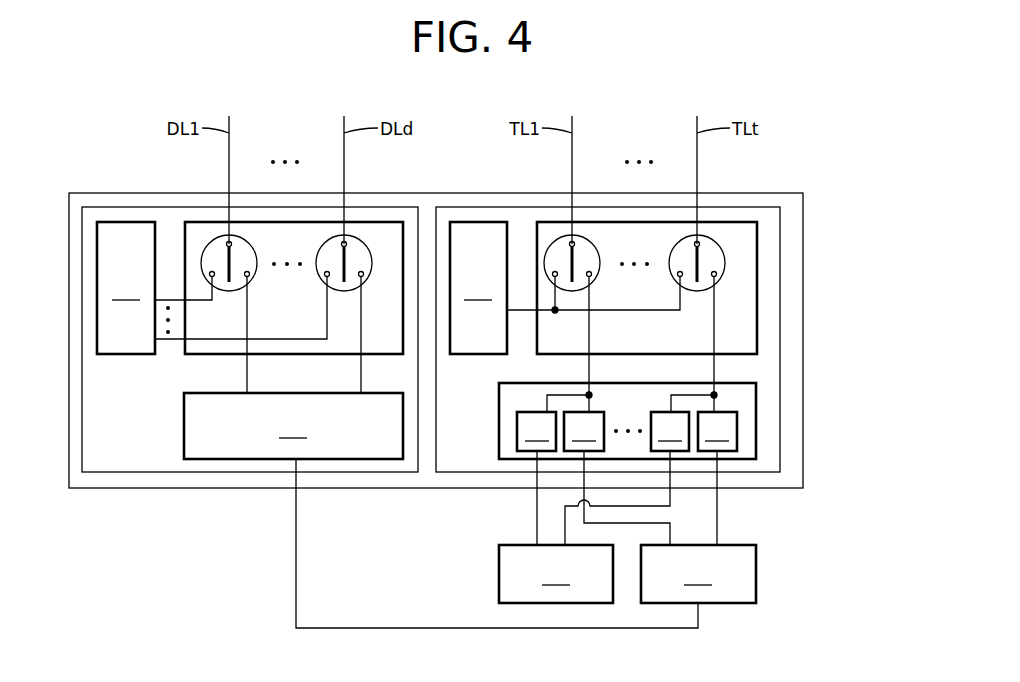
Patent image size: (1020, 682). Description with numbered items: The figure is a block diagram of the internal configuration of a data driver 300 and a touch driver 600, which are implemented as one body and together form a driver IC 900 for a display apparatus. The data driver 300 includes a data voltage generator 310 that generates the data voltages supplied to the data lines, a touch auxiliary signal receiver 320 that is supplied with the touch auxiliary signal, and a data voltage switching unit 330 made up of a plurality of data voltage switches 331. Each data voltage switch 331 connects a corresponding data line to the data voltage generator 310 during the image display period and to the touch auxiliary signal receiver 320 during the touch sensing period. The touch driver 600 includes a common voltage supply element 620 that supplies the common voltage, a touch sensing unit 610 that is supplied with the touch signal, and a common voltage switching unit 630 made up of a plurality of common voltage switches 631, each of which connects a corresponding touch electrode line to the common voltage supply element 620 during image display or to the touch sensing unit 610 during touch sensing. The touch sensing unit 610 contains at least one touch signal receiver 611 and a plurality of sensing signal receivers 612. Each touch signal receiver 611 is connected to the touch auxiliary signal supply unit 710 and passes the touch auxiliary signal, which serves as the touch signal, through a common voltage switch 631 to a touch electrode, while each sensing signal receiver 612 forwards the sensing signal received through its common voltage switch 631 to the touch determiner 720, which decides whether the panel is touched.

The driver IC 900 is at (803, 323).
The data driver 300 is at (388, 207).
The data voltage generator 310 is at (126, 288).
The touch auxiliary signal receiver 320 is at (293, 426).
The data voltage switching unit 330 is at (207, 222).
The data voltage switch 331 is at (254, 250).
The touch driver 600 is at (732, 207).
The touch sensing unit 610 is at (757, 425).
The touch signal receiver 611 is at (650, 431).
The sensing signal receiver 612 is at (603, 431).
The common voltage supply element 620 is at (478, 288).
The common voltage switching unit 630 is at (546, 222).
The common voltage switch 631 is at (597, 250).
The touch auxiliary signal supply unit 710 is at (698, 574).
The touch determiner 720 is at (556, 574).